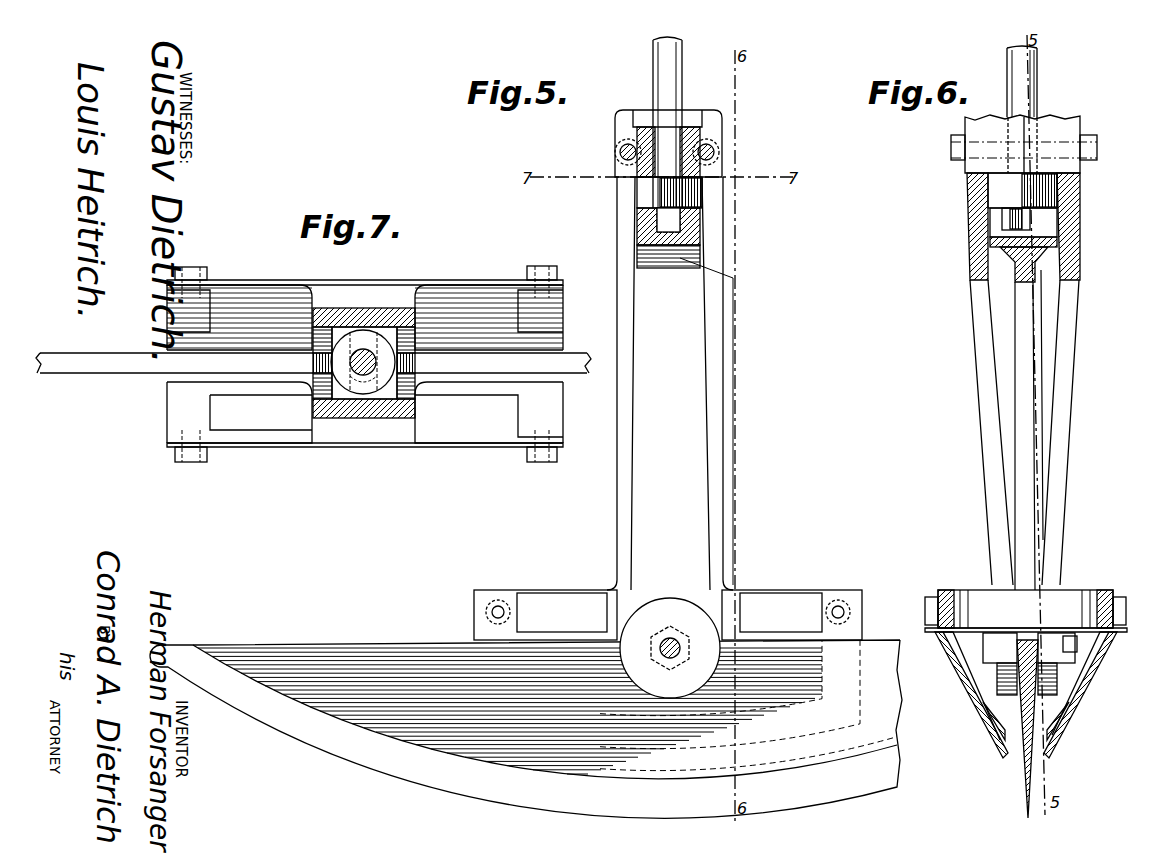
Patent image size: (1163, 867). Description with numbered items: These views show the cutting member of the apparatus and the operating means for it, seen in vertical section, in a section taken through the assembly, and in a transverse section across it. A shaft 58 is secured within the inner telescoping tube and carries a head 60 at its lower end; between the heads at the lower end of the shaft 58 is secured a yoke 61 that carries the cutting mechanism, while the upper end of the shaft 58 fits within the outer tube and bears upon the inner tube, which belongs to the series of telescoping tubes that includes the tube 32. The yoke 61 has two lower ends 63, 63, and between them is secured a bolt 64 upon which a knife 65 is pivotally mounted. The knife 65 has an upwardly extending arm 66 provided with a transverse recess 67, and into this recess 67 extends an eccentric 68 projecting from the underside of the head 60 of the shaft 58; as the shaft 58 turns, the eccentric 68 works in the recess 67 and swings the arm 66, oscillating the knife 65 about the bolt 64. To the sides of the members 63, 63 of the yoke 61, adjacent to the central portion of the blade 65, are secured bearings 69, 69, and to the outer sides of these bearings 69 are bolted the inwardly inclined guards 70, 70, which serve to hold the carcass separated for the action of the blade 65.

In FIG. 5, the telescoping tube 32 is at (690, 134).
In FIG. 5, the shaft 58 is at (683, 84).
In FIG. 6, the shaft 58 is at (1040, 88).
In FIG. 7, the shaft 58 is at (366, 352).
In FIG. 5, the head 60 is at (705, 192).
In FIG. 6, the head 60 is at (998, 190).
In FIG. 7, the head 60 is at (380, 418).
In FIG. 5, the yoke 61 is at (640, 132).
In FIG. 6, the yoke 61 is at (1055, 135).
In FIG. 5, the lower ends of the yoke 63 is at (716, 402).
In FIG. 6, the lower ends of the yoke 63 is at (978, 376).
In FIG. 5, the bolt 64 is at (672, 642).
In FIG. 6, the bolt 64 is at (1078, 641).
In FIG. 5, the knife 65 is at (368, 708).
In FIG. 6, the knife 65 is at (1034, 762).
In FIG. 7, the knife 65 is at (127, 366).
In FIG. 5, the upwardly extending arm 66 is at (670, 383).
In FIG. 6, the upwardly extending arm 66 is at (1025, 423).
In FIG. 5, the transverse recess 67 is at (637, 233).
In FIG. 6, the transverse recess 67 is at (1040, 224).
In FIG. 5, the eccentric 68 is at (700, 220).
In FIG. 6, the eccentric 68 is at (1008, 222).
In FIG. 7, the eccentric 68 is at (356, 418).
In FIG. 5, the bearings 69 is at (541, 598).
In FIG. 6, the bearings 69 is at (957, 590).
In FIG. 6, the inwardly inclined guards 70 is at (1106, 682).
In FIG. 7, the inwardly inclined guards 70 is at (246, 286).